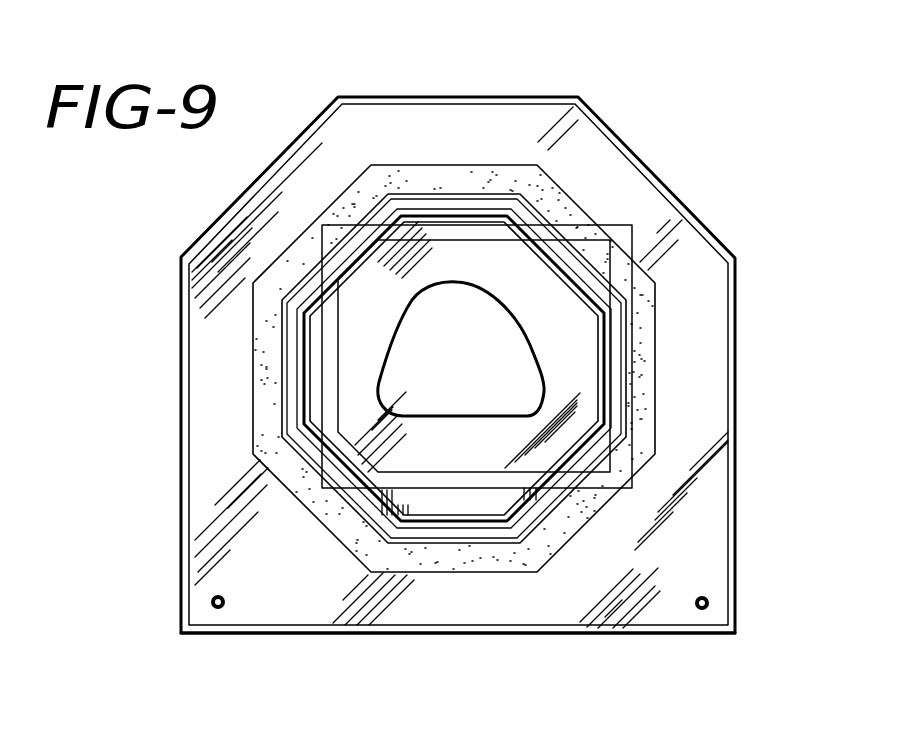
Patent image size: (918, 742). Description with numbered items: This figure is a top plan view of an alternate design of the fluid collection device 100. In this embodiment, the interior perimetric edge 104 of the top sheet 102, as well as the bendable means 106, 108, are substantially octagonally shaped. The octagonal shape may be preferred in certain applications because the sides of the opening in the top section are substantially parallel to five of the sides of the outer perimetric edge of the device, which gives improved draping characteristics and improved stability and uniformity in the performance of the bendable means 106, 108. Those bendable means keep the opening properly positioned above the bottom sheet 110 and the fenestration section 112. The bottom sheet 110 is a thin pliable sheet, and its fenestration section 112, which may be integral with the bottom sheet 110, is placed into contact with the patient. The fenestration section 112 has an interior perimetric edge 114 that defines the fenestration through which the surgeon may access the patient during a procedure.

The fluid collection device 100 is at (748, 148).
The top sheet 102 is at (690, 257).
The interior perimetric edge 104 is at (603, 331).
The bendable means 106 is at (283, 328).
The bendable means 108 is at (298, 362).
The bottom sheet 110 is at (281, 607).
The fenestration section 112 is at (356, 413).
The interior perimetric edge 114 is at (413, 300).